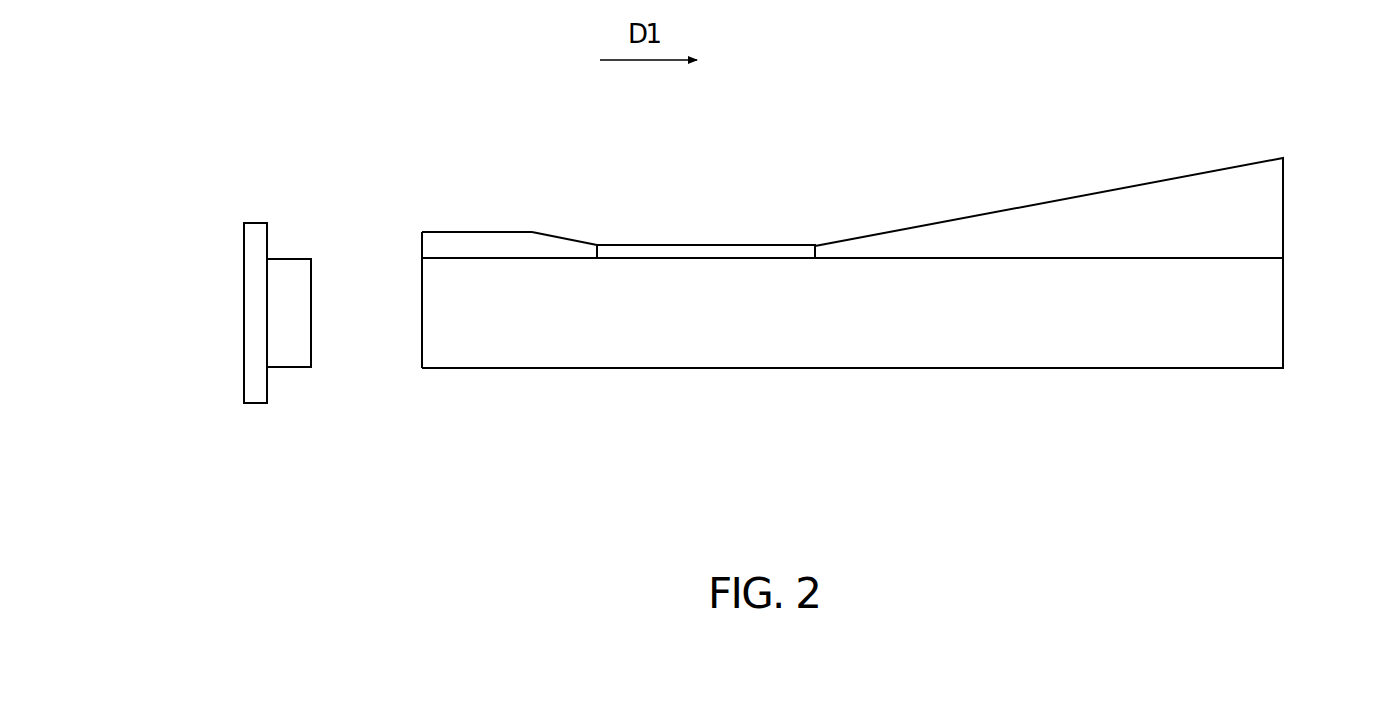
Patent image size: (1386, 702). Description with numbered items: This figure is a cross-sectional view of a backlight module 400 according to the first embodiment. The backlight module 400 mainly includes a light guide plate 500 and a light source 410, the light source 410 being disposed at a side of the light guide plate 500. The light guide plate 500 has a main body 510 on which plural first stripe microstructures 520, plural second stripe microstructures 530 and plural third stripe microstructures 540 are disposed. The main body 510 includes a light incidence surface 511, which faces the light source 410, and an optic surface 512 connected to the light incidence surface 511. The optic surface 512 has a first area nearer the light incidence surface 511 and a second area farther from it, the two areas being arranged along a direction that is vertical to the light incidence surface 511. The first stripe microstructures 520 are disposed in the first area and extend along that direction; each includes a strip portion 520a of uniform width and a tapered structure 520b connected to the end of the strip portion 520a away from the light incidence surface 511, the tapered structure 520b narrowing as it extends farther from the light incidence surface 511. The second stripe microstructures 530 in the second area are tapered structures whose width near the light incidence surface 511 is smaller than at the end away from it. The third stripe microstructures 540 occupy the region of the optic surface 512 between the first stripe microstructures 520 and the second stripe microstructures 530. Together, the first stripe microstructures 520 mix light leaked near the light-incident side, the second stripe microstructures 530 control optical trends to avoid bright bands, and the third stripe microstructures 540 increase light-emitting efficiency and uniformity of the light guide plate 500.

The backlight module 400 is at (204, 106).
The light source 410 is at (254, 278).
The light guide plate 500 is at (412, 200).
The main body 510 is at (1265, 318).
The light incidence surface 511 is at (422, 340).
The optic surface 512 is at (886, 258).
The first stripe microstructures 520 is at (447, 142).
The strip portion 520a is at (488, 245).
The tapered structure 520b is at (565, 250).
The second stripe microstructures 530 is at (1105, 215).
The third stripe microstructures 540 is at (688, 250).